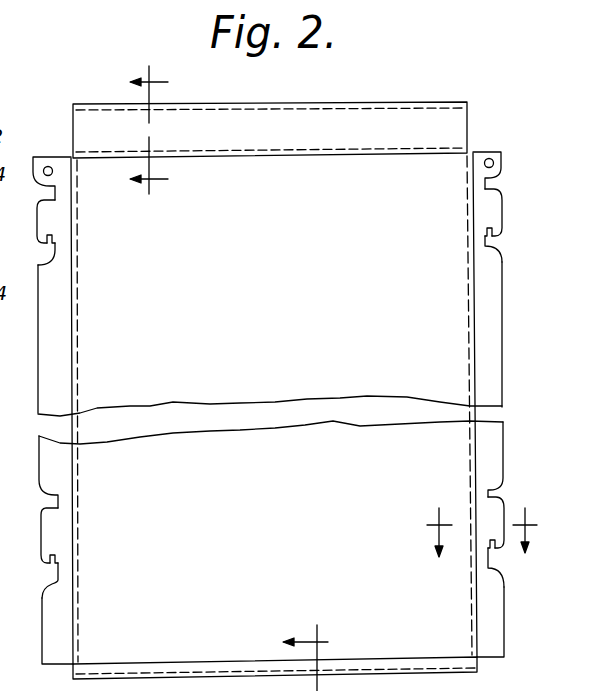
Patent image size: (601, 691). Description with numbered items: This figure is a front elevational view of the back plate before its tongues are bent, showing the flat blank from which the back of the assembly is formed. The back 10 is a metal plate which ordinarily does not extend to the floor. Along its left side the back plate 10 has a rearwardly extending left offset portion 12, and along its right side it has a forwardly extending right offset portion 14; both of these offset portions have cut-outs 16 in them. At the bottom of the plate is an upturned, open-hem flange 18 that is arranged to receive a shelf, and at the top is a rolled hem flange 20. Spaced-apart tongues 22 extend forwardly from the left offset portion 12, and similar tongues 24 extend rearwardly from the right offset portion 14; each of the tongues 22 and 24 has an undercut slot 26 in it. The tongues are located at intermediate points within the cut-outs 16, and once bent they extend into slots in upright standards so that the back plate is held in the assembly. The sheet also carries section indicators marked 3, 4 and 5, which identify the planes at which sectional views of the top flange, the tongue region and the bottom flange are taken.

The back plate 10 is at (270, 408).
The left offset portion 12 is at (48, 338).
The right offset portion 14 is at (488, 340).
The cut-outs 16 is at (489, 185).
The open-hem flange 18 is at (151, 669).
The rolled hem flange 20 is at (400, 117).
The tongues 22 is at (43, 215).
The tongues 24 is at (495, 213).
The undercut slots 26 is at (57, 238).
The section line 3- 3 is at (138, 130).
The section line 4- 4 is at (482, 545).
The section line 5- 5 is at (292, 658).